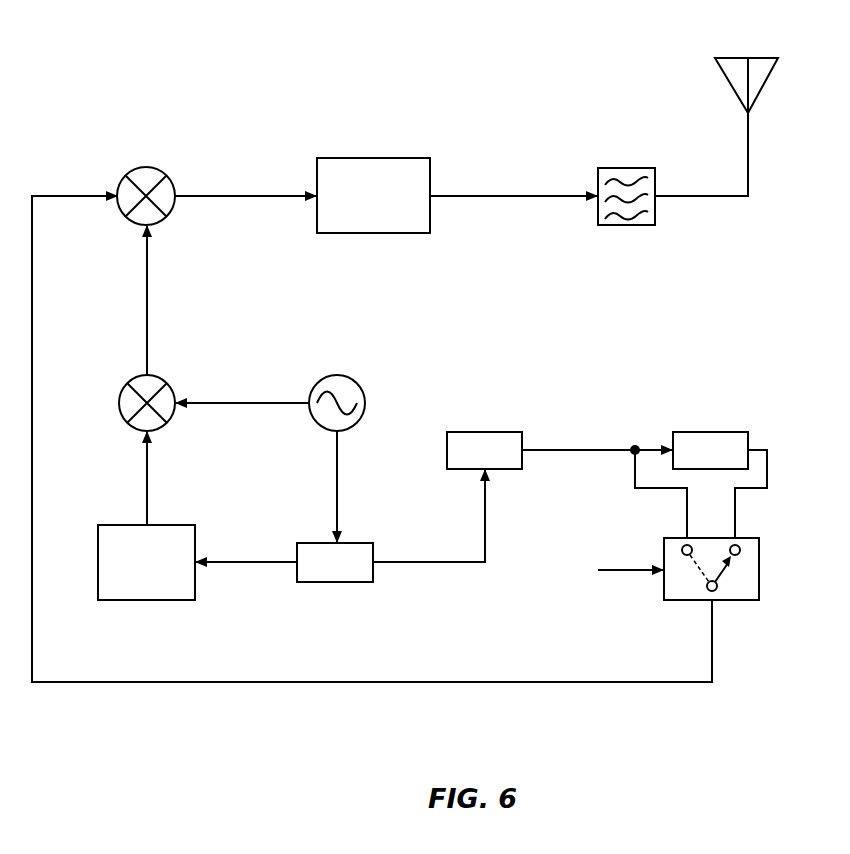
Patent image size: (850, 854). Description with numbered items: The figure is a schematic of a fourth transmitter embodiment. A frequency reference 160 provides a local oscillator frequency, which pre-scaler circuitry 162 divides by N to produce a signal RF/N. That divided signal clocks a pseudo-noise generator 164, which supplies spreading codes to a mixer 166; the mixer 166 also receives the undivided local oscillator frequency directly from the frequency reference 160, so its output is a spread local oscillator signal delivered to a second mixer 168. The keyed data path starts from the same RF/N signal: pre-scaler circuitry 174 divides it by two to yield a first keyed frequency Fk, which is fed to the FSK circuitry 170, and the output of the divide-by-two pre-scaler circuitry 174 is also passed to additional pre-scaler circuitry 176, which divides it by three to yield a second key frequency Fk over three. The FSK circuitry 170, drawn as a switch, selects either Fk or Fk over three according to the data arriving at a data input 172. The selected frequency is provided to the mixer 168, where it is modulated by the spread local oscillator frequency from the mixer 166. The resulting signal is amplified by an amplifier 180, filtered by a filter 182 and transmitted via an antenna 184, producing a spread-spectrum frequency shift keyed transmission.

The frequency reference 160 is at (355, 380).
The pre-scaler circuitry 162 is at (357, 543).
The pseudo-noise generator 164 is at (175, 525).
The mixer 166 is at (166, 381).
The mixer 168 is at (163, 172).
The FSK circuitry 170 is at (760, 550).
The data input 172 is at (622, 580).
The pre-scaler circuitry 174 is at (493, 432).
The pre-scaler circuitry 176 is at (720, 432).
The amplifier 180 is at (386, 158).
The filter 182 is at (632, 168).
The antenna 184 is at (768, 80).